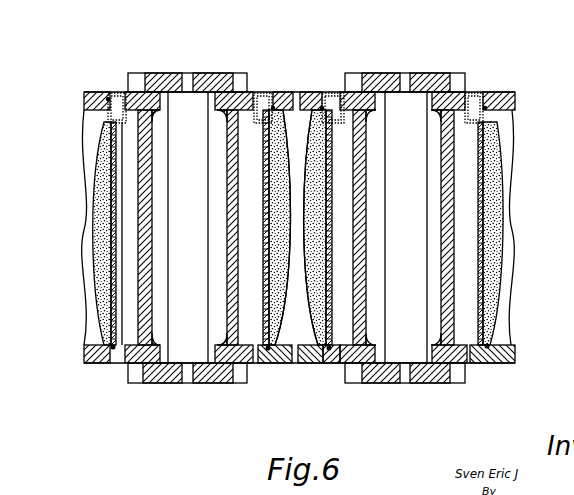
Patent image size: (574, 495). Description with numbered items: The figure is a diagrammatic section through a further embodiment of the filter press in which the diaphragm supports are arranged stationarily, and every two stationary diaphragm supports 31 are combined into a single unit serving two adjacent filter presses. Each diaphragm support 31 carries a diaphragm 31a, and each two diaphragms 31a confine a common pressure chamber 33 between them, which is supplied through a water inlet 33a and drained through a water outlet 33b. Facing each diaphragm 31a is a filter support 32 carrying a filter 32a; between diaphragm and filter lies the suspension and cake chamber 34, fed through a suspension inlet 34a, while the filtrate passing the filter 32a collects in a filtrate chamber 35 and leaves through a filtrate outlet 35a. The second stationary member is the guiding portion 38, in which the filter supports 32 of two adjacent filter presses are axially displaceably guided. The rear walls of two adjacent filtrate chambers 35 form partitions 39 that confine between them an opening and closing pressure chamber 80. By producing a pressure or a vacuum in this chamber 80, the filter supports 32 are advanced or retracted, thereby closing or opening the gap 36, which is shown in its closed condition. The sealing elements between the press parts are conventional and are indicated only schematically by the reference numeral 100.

The diaphragm support 31 is at (276, 92).
The diaphragm 31a is at (309, 156).
The filter support 32 is at (330, 92).
The filter 32a is at (396, 73).
The pressure chamber 33 is at (306, 227).
The water inlet 33a is at (301, 92).
The water outlet 33b is at (295, 358).
The suspension and cake chamber 34 is at (274, 223).
The suspension inlet 34a is at (256, 92).
The filtrate chamber 35 is at (244, 227).
The filtrate outlet 35a is at (262, 352).
The gap 36 is at (326, 352).
The stationary guiding portion 38 is at (207, 73).
The partition 39 is at (443, 197).
The opening and closing pressure chamber 80 is at (188, 227).
The sealing elements 100 is at (141, 383).